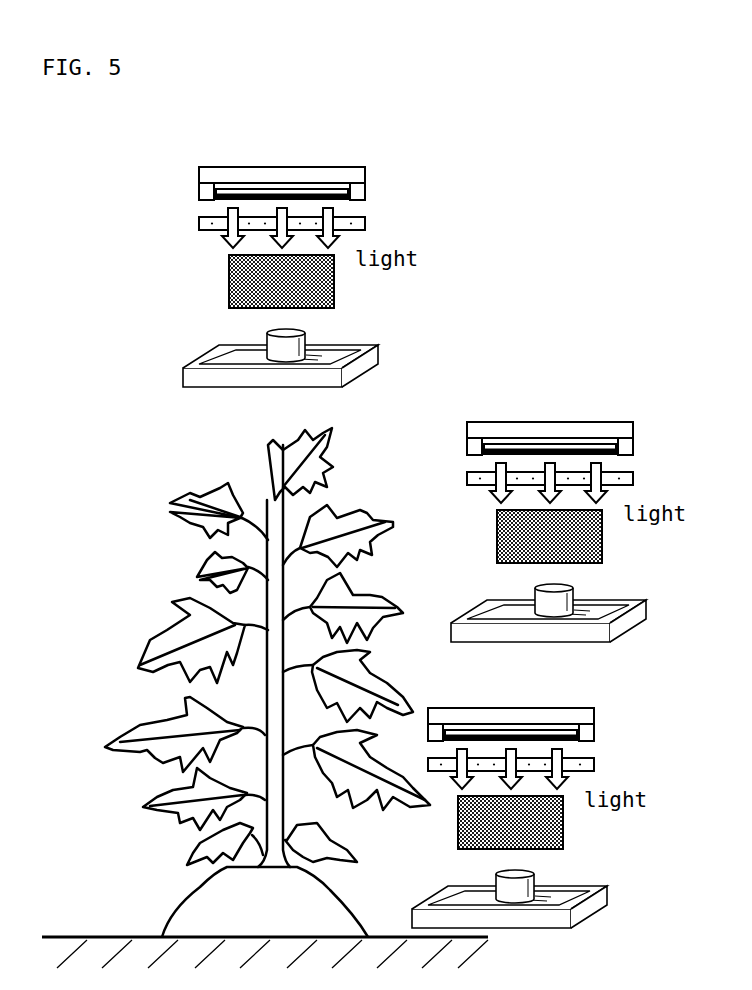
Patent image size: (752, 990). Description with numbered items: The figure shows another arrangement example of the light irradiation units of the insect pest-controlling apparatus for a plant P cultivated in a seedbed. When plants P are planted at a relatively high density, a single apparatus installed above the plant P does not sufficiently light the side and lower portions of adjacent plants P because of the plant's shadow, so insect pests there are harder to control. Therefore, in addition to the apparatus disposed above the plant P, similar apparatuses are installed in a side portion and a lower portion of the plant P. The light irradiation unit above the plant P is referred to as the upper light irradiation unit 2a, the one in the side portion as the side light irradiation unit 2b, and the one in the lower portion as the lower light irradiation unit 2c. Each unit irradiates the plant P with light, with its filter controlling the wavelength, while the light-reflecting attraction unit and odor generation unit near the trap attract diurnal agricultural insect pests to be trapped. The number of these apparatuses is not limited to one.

The upper light irradiation unit 2a is at (357, 173).
The side light irradiation unit 2b is at (587, 437).
The lower light irradiation unit 2c is at (547, 723).
The plant P is at (140, 667).